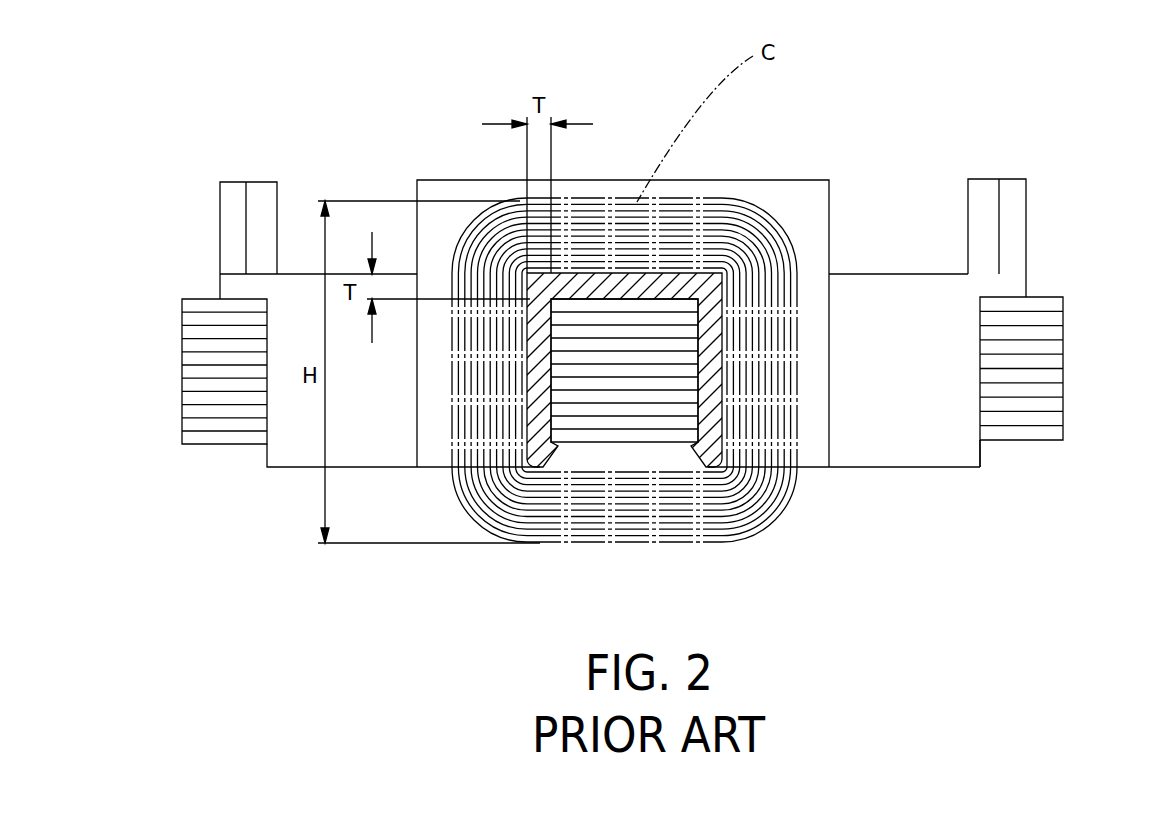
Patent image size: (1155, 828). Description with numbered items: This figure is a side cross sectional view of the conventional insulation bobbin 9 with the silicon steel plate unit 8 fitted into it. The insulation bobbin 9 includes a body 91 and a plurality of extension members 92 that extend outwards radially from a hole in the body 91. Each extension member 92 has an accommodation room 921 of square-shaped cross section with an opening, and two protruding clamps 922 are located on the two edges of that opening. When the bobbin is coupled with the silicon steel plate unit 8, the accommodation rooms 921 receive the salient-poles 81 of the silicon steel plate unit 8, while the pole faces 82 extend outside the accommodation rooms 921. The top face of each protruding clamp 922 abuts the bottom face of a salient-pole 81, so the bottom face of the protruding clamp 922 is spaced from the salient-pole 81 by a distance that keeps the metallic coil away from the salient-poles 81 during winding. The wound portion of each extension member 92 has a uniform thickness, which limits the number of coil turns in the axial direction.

The silicon steel plate unit 8 is at (1058, 285).
The salient-pole 81 is at (622, 437).
The pole face 82 is at (1063, 370).
The insulation bobbin 9 is at (962, 140).
The body 91 is at (797, 183).
The extension member 92 is at (889, 278).
The accommodation room 921 is at (983, 396).
The protruding clamp 922 is at (543, 467).